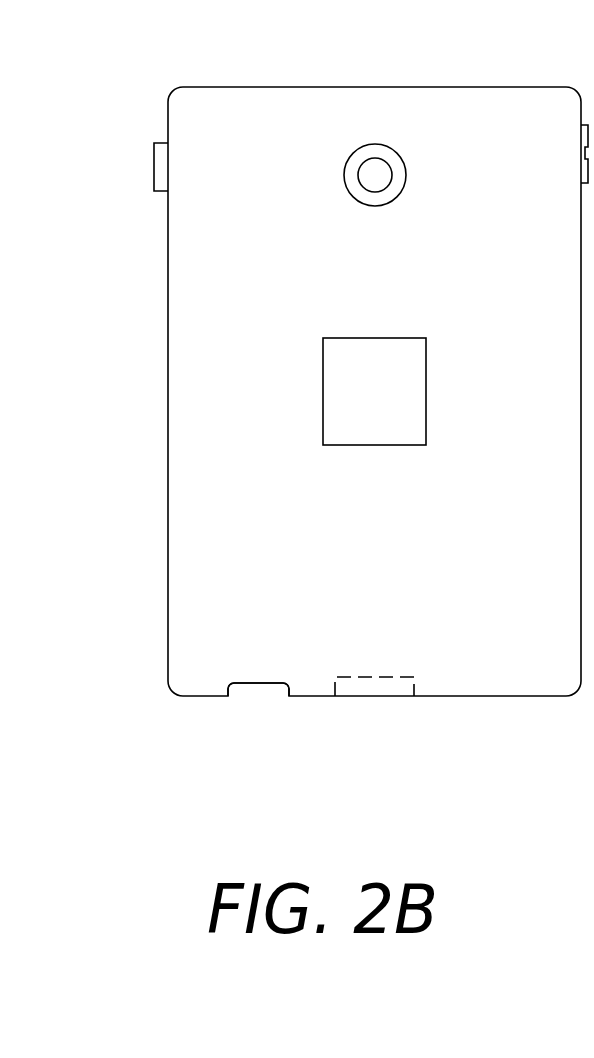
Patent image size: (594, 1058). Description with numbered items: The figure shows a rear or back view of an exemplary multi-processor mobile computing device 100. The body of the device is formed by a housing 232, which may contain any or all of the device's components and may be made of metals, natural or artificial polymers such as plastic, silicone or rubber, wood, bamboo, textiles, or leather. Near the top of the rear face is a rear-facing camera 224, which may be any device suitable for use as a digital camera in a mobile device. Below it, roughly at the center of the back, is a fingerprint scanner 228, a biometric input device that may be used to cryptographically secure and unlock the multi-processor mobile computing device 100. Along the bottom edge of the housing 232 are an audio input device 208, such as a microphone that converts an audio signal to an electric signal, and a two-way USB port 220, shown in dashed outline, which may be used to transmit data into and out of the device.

The multi-processor mobile computing device 100 is at (279, 73).
The rear-facing camera 224 is at (375, 175).
The fingerprint scanner 228 is at (410, 368).
The housing 232 is at (240, 355).
The audio input device 208 is at (263, 697).
The two-way USB port 220 is at (381, 697).